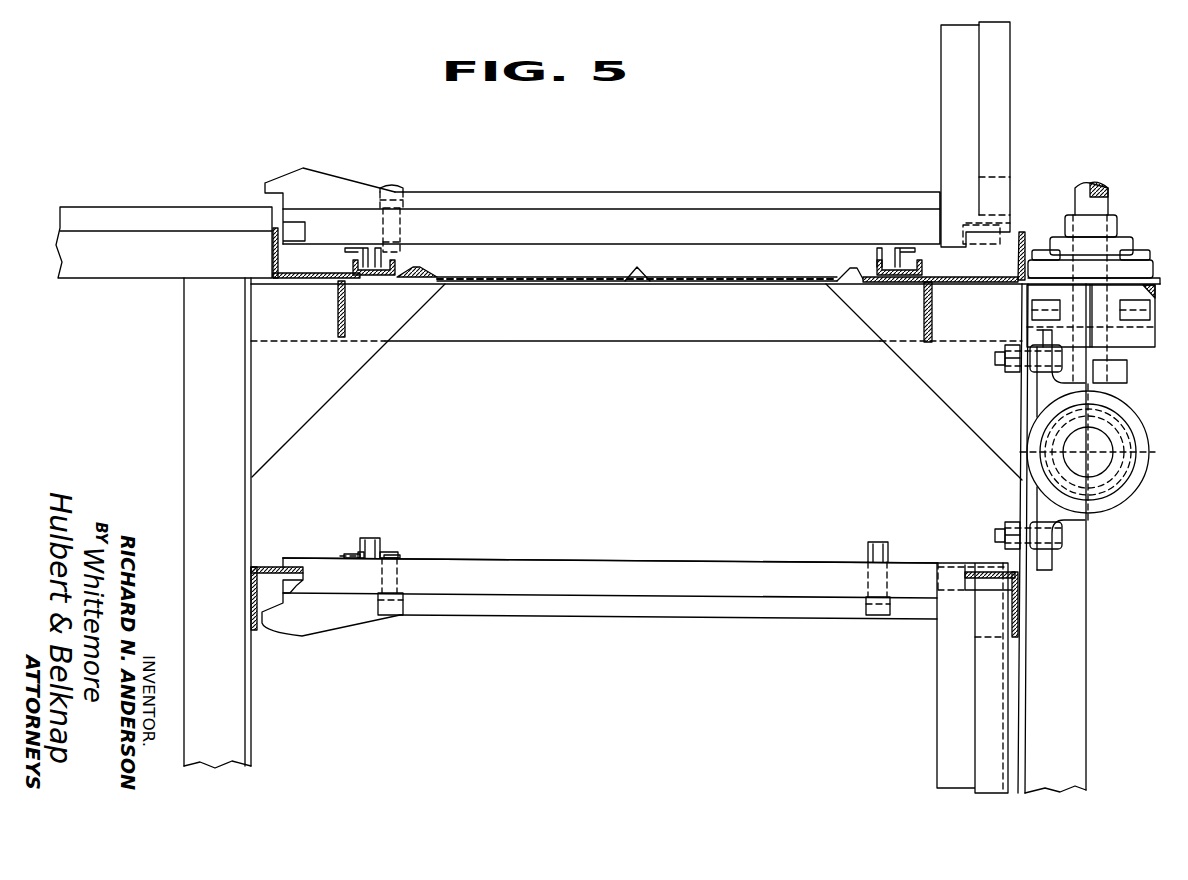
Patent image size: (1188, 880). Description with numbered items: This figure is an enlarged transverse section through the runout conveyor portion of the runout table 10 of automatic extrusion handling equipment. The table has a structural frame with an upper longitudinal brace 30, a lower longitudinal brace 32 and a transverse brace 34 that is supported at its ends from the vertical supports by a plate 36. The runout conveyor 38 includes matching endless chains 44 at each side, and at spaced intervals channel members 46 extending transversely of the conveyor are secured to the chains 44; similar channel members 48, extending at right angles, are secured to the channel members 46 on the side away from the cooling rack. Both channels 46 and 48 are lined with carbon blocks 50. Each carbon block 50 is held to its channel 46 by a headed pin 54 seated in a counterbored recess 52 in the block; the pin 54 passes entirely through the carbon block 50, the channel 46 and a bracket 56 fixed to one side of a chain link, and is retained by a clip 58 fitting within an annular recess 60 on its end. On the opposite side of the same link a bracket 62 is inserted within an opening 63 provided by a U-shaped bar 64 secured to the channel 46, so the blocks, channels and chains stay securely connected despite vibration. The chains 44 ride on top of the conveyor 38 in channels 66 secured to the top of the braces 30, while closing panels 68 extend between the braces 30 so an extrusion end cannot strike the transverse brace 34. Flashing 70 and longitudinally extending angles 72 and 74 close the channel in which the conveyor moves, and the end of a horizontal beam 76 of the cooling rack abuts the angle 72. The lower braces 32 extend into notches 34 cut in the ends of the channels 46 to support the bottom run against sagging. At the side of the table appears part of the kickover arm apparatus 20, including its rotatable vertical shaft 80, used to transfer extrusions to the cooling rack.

The runout table 10 is at (183, 432).
The kickover arm apparatus 20 is at (1157, 272).
The upper longitudinal brace 30 is at (347, 310).
The lower longitudinal brace 32 is at (254, 565).
The transverse brace 34 is at (655, 345).
The plate 36 is at (305, 427).
The runout conveyor 38 is at (515, 556).
The endless chain 44 is at (371, 250).
The channel member 46 is at (638, 618).
The channel member 48 is at (1013, 80).
The carbon block 50 is at (716, 191).
The counterbored recess 52 is at (393, 186).
The headed pin 54 is at (403, 218).
The bracket 56 is at (392, 552).
The clip 58 is at (402, 551).
The annular recess 60 is at (395, 560).
The bracket 62 is at (362, 550).
The opening 63 is at (342, 556).
The U-shaped bar 64 is at (350, 553).
The channel 66 is at (353, 270).
The closing panel 68 is at (545, 283).
The flashing 70 is at (946, 290).
The longitudinally extending angle 72 is at (280, 283).
The longitudinally extending angle 74 is at (1025, 245).
The horizontal beam 76 is at (160, 282).
The rotatable vertical shaft 80 is at (1104, 203).